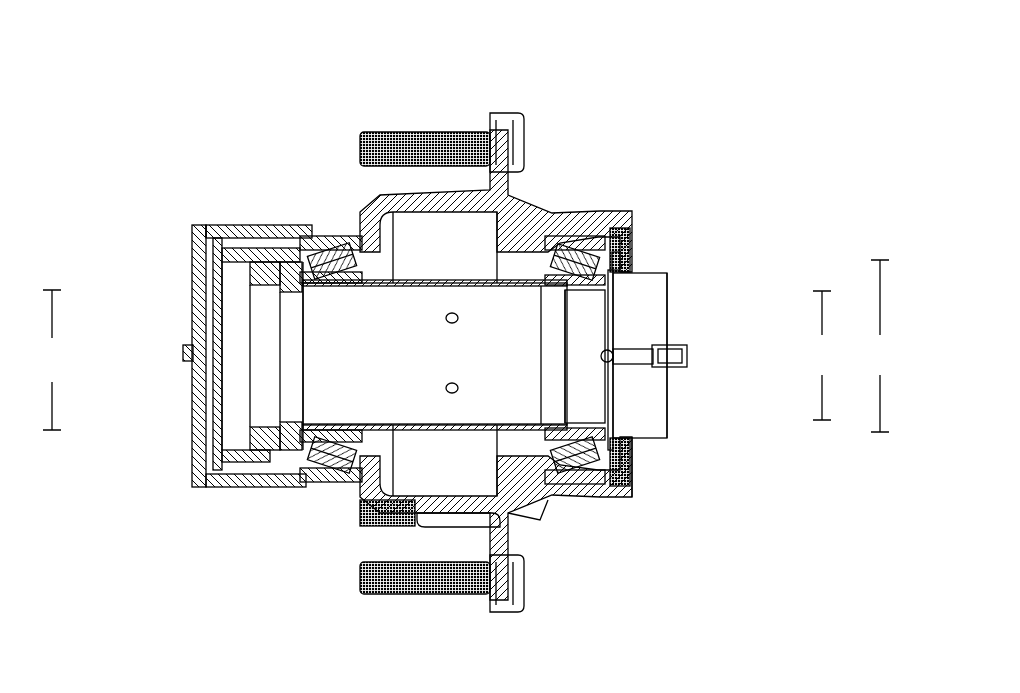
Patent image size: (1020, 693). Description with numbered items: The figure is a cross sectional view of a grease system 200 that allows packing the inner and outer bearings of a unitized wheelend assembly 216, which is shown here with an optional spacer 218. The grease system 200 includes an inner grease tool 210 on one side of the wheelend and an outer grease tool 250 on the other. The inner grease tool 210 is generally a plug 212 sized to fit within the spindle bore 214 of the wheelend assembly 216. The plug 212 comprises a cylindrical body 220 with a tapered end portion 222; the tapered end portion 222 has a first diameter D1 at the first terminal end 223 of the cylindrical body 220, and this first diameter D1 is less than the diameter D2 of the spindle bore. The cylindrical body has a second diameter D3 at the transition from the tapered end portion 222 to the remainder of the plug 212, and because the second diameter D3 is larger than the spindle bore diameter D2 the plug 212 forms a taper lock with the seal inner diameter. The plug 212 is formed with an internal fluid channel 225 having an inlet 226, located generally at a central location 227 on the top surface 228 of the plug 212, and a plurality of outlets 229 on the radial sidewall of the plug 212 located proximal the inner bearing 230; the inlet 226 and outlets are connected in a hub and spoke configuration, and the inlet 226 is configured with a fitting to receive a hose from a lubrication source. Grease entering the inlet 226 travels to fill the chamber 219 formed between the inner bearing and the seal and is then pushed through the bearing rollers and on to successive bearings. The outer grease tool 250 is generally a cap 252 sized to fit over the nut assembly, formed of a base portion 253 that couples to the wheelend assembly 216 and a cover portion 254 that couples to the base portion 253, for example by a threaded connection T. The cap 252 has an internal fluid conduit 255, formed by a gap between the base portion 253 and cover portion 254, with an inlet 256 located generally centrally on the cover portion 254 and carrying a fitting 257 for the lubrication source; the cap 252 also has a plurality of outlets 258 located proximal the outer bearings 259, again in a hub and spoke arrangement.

The grease system 200 is at (762, 100).
The inner grease tool 210 is at (613, 300).
The plug 212 is at (600, 400).
The spindle bore 214 is at (645, 455).
The unitized wheelend assembly 216 is at (568, 125).
The spacer 218 is at (437, 369).
The chamber 219 is at (622, 480).
The cylindrical body 220 is at (658, 340).
The tapered end portion 222 is at (603, 340).
The first terminal end 223 is at (538, 515).
The internal fluid channel 225 is at (628, 262).
The inlet 226 is at (678, 360).
The central location 227 is at (584, 498).
The top surface 228 is at (672, 282).
The outlets 229 is at (618, 220).
The inner bearing 230 is at (566, 212).
The outer grease tool 250 is at (193, 485).
The cap 252 is at (242, 205).
The base portion 253 is at (270, 488).
The cover portion 254 is at (192, 440).
The internal fluid conduit 255 is at (206, 286).
The inlet 256 is at (183, 350).
The fitting 257 is at (183, 372).
The outlets 258 is at (296, 220).
The outer bearings 259 is at (331, 492).
The threaded connection T is at (220, 225).
The first diameter D1 is at (821, 355).
The spindle bore diameter D2 is at (51, 360).
The second diameter D3 is at (879, 346).